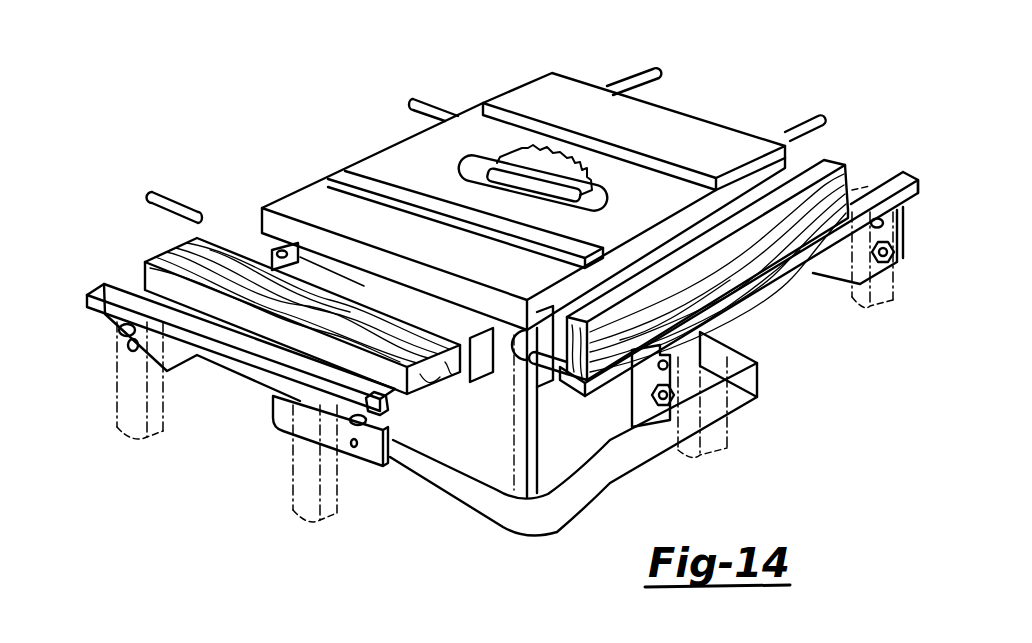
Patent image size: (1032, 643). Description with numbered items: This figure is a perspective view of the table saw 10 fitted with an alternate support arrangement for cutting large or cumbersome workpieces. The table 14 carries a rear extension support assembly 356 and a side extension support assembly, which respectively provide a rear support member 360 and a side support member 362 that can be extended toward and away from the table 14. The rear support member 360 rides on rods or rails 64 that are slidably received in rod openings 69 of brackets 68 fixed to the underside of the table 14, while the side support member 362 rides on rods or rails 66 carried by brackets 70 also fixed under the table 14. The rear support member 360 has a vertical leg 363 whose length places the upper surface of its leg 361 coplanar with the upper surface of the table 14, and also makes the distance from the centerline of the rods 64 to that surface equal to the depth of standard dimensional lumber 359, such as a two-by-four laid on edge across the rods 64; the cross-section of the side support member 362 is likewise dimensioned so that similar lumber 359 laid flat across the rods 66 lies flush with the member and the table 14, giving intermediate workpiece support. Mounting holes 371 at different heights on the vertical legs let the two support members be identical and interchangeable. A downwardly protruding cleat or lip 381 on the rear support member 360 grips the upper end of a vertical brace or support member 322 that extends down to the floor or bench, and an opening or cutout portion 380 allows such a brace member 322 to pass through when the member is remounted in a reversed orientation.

The table saw 10 is at (599, 89).
The table 14 is at (694, 130).
The rods or rails 64 is at (432, 103).
The rods or rails 66 is at (664, 92).
The brackets 68 is at (490, 365).
The rod openings 69 is at (543, 338).
The brackets 70 is at (278, 253).
The brace or support members 322 is at (165, 438).
The support assembly 356 is at (906, 260).
The board 359 is at (182, 248).
The rear support member 360 is at (840, 274).
The leg 361 is at (930, 168).
The side support member 362 is at (111, 341).
The vertical leg 363 is at (644, 424).
The mounting holes 371 is at (354, 446).
The opening or cutout portion 380 is at (198, 364).
The cleat or lip 381 is at (900, 230).